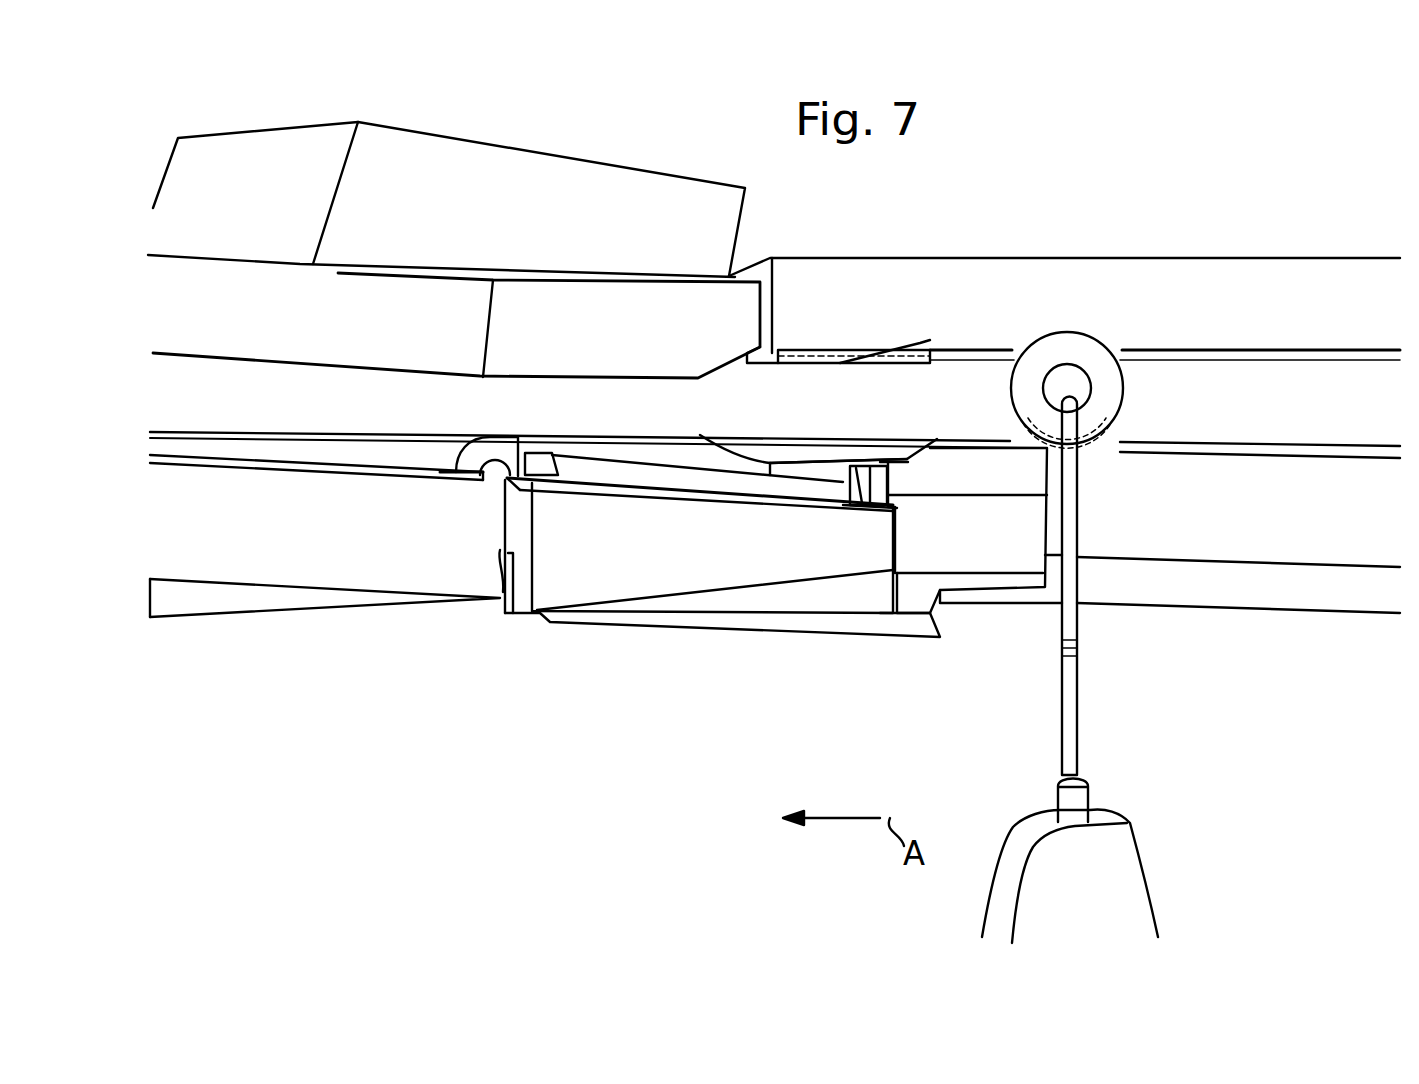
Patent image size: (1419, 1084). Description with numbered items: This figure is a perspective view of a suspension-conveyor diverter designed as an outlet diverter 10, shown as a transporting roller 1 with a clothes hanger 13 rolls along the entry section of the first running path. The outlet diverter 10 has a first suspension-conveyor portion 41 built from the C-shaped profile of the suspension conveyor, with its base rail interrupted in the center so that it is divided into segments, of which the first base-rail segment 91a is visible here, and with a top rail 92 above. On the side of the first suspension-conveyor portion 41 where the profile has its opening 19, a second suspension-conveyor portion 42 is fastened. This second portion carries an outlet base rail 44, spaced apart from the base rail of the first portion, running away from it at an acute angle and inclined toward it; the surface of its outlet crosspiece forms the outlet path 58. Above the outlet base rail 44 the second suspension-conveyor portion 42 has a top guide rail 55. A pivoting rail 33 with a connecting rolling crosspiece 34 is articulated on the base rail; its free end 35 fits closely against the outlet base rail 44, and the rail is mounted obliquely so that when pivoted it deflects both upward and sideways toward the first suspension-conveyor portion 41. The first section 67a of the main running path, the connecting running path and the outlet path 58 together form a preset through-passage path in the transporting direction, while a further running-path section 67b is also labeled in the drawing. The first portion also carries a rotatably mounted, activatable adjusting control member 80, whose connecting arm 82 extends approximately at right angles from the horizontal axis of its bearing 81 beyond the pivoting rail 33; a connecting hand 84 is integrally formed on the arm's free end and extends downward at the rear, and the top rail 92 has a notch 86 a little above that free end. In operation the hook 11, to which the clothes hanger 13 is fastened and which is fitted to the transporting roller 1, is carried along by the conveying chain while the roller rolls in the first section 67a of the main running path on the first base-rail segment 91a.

The transporting roller 1 is at (1080, 343).
The outlet diverter 10 is at (794, 645).
The hook 11 is at (1083, 667).
The clothes hanger 13 is at (1125, 853).
The opening 19 is at (1243, 388).
The pivoting rail 33 is at (597, 580).
The connecting rolling crosspiece 34 is at (518, 474).
The free end 35 is at (512, 538).
The first suspension-conveyor portion 41 is at (1074, 480).
The second suspension-conveyor portion 42 is at (175, 625).
The outlet base rail 44 is at (272, 563).
The top guide rail 55 is at (284, 278).
The outlet path 58 is at (215, 462).
The first section of the main running path 67a is at (1247, 440).
The lower guide surface 67b is at (333, 436).
The adjusting control member 80 is at (761, 419).
The bearing 81 is at (494, 478).
The connecting arm 82 is at (673, 453).
The connecting hand 84 is at (843, 457).
The notch 86 is at (931, 340).
The first base-rail segment 91a is at (1302, 540).
The top rail 92 is at (1340, 283).